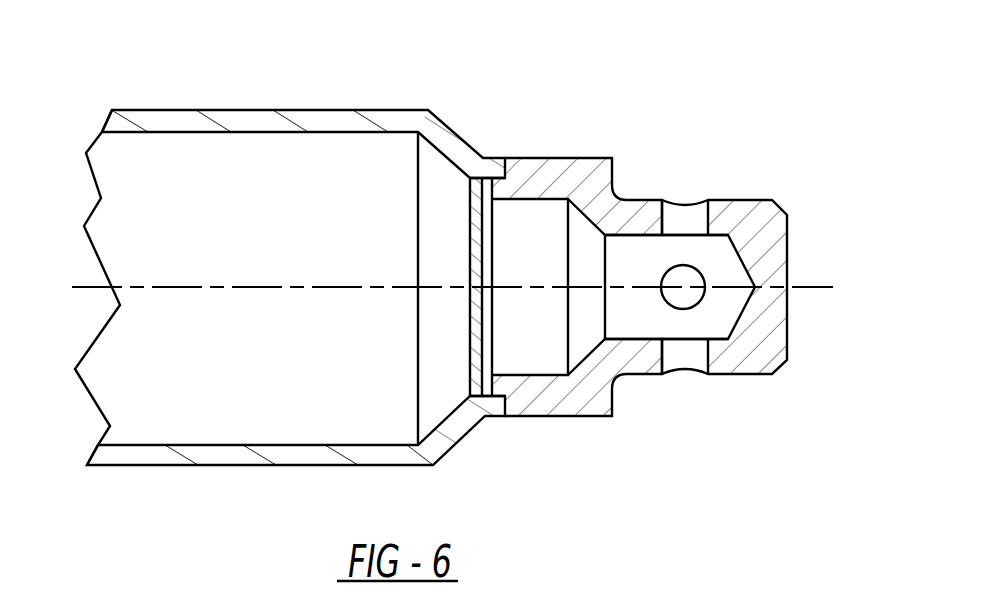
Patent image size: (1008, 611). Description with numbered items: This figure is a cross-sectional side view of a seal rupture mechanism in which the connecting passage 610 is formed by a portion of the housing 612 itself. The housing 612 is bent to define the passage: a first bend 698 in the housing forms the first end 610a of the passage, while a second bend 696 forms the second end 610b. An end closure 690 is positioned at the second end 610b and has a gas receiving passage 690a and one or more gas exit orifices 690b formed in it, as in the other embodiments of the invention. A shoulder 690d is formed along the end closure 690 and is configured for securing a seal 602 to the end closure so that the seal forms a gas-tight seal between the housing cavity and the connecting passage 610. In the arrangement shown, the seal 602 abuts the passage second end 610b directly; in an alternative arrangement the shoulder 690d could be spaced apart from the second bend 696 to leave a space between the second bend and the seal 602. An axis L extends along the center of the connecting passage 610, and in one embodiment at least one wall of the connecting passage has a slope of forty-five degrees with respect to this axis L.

The housing 612 is at (273, 110).
The first bend 698 is at (425, 122).
The connecting passage 610 is at (443, 198).
The first end 610a is at (418, 323).
The second end 610b is at (472, 320).
The shoulder 690d is at (490, 198).
The seal 602 is at (603, 158).
The end closure 690 is at (787, 237).
The gas receiving passage 690a is at (543, 305).
The gas exit orifices 690b is at (683, 353).
The second bend 696 is at (477, 405).
The axis L is at (815, 288).